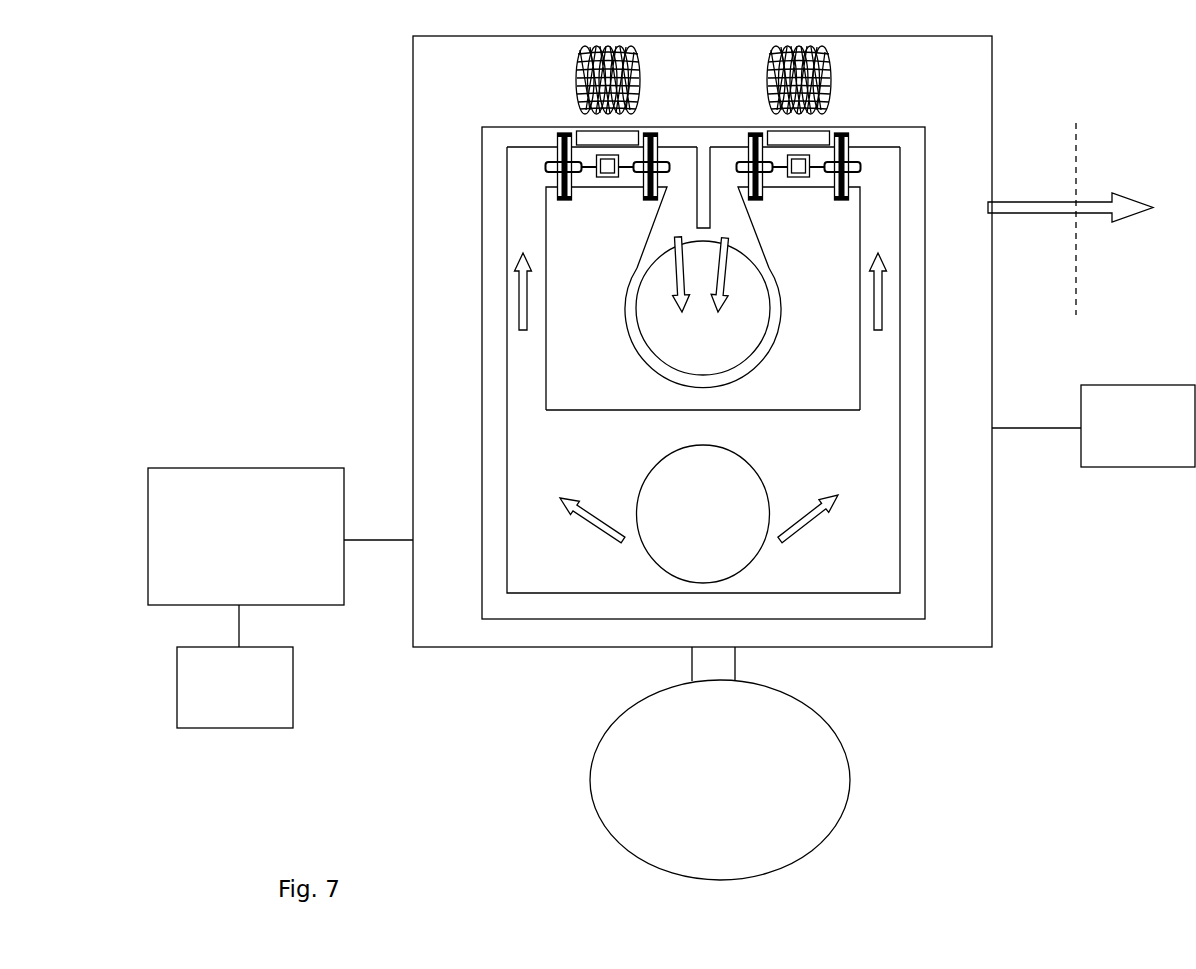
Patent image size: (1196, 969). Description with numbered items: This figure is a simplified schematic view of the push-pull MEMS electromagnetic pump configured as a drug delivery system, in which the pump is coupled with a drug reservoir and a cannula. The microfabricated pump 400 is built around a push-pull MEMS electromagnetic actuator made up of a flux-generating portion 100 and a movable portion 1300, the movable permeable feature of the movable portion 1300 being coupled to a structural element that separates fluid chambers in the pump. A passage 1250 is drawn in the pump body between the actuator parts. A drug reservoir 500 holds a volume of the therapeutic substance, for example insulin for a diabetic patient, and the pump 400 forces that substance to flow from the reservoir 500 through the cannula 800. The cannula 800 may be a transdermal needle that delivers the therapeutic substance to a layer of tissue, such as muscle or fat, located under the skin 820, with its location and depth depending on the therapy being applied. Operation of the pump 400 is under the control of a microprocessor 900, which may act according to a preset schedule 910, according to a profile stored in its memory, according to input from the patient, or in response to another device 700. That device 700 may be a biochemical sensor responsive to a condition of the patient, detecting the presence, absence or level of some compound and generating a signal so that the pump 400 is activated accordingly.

The flux-generating portion 100 is at (567, 57).
The movable portion 1300 is at (543, 163).
The inlet passage 1250 is at (726, 160).
The cannula 800 is at (1040, 198).
The skin 820 is at (1077, 180).
The device 700 is at (1150, 443).
The microprocessor 900 is at (261, 555).
The preset schedule 910 is at (245, 696).
The drug reservoir 500 is at (730, 788).
The microfabricated pump 400 is at (1067, 704).